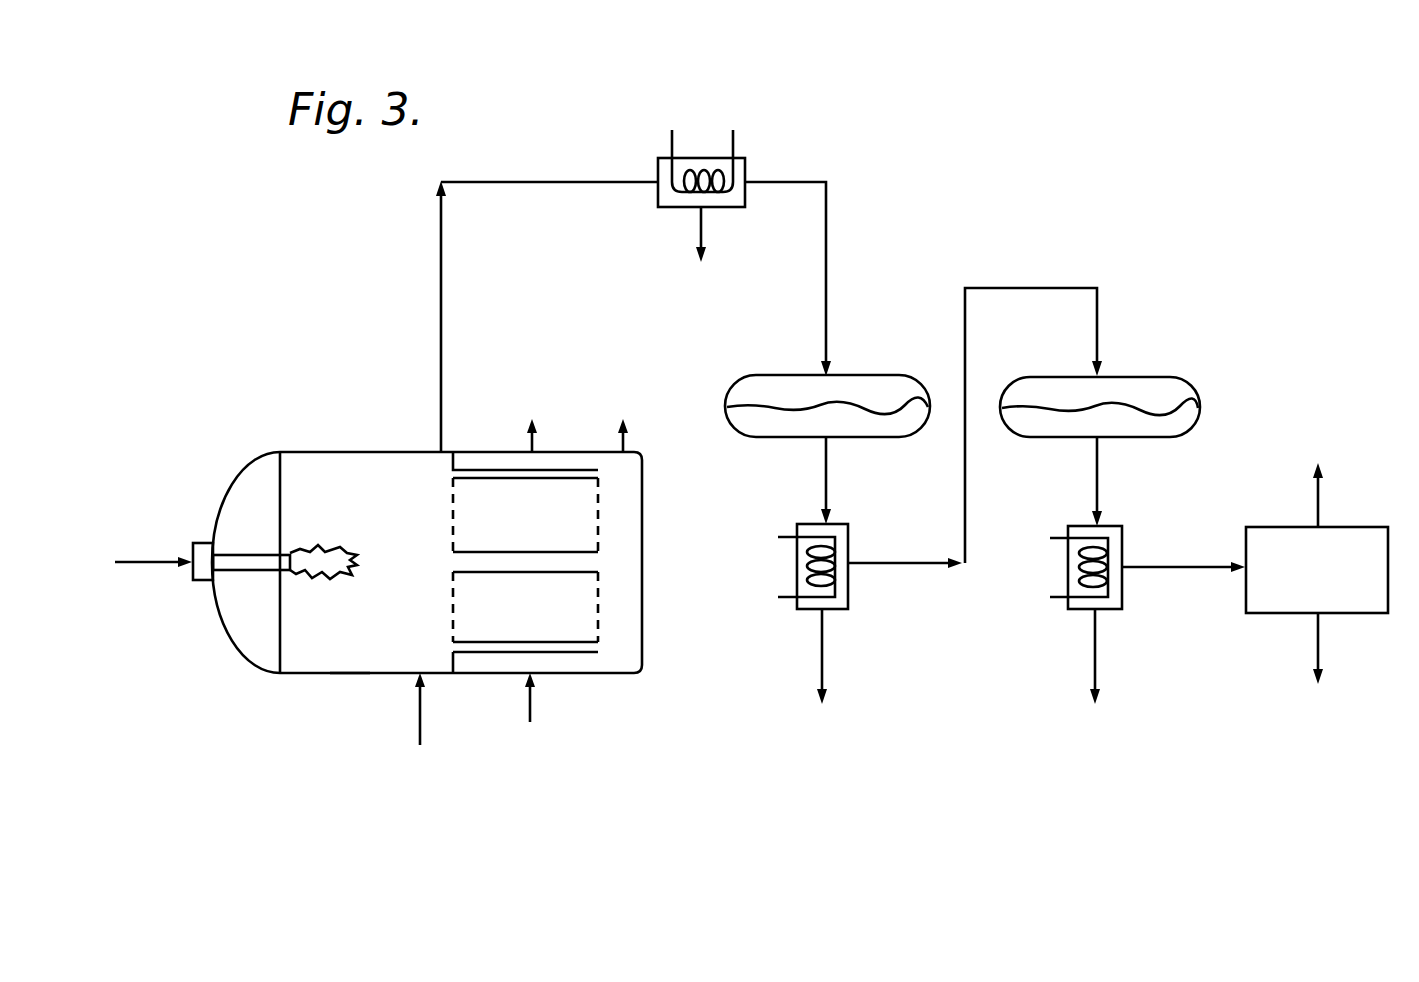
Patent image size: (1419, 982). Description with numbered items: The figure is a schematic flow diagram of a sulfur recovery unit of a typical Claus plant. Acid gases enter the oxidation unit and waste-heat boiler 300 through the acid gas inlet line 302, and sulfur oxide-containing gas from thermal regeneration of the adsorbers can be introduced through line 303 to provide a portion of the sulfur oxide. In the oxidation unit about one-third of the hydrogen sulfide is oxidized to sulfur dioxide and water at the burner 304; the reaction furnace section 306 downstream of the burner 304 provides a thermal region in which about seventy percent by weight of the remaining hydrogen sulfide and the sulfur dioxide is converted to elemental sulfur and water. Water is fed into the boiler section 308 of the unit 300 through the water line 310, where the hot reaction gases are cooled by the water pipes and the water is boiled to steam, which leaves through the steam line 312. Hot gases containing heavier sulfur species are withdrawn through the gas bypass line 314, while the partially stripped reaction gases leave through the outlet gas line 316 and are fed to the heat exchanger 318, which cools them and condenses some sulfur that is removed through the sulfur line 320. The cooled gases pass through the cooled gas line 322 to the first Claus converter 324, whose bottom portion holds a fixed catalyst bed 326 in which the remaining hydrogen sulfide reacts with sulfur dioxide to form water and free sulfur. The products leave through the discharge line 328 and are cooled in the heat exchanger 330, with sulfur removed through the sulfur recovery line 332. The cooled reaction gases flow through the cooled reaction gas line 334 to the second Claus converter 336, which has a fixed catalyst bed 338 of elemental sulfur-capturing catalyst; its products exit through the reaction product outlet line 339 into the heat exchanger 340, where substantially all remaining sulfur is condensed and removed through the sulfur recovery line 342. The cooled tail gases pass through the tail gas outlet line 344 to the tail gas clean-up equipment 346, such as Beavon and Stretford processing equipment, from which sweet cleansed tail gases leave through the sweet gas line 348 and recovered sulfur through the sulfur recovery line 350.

The oxidation unit and waste-heat boiler 300 is at (332, 452).
The acid gas inlet line 302 is at (128, 562).
The line 303 is at (421, 725).
The burner 304 is at (293, 552).
The reaction furnace section 306 is at (344, 672).
The boiler section 308 is at (578, 652).
The water line 310 is at (530, 705).
The steam line 312 is at (532, 432).
The gas bypass line 314 is at (623, 432).
The outlet gas line 316 is at (441, 325).
The heat exchanger 318 is at (658, 160).
The sulfur line 320 is at (701, 224).
The cooled gas line 322 is at (826, 283).
The first Claus converter 324 is at (860, 375).
The fixed catalyst bed 326 is at (780, 407).
The discharge line 328 is at (826, 470).
The heat exchanger 330 is at (848, 537).
The sulfur recovery line 332 is at (822, 655).
The cooled reaction gas line 334 is at (965, 485).
The second Claus converter 336 is at (1143, 377).
The fixed catalyst bed 338 is at (1058, 408).
The reaction product outlet line 339 is at (1097, 470).
The heat exchanger 340 is at (1122, 530).
The sulfur recovery line 342 is at (1095, 658).
The tail gas outlet line 344 is at (1158, 567).
The tail gas clean-up equipment 346 is at (1262, 530).
The sweet gas line 348 is at (1318, 505).
The sulfur recovery line 350 is at (1318, 650).